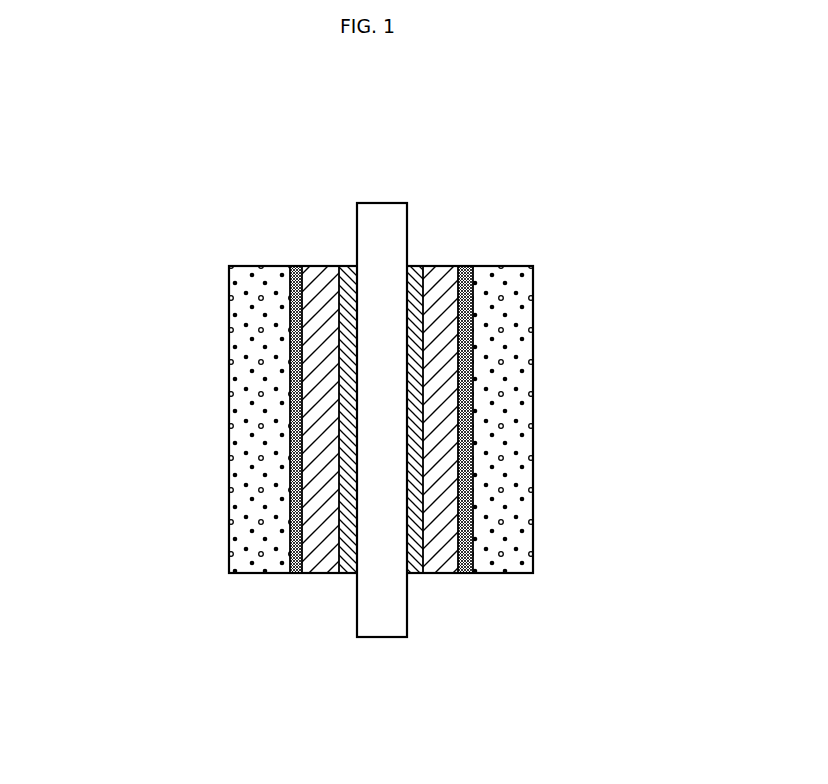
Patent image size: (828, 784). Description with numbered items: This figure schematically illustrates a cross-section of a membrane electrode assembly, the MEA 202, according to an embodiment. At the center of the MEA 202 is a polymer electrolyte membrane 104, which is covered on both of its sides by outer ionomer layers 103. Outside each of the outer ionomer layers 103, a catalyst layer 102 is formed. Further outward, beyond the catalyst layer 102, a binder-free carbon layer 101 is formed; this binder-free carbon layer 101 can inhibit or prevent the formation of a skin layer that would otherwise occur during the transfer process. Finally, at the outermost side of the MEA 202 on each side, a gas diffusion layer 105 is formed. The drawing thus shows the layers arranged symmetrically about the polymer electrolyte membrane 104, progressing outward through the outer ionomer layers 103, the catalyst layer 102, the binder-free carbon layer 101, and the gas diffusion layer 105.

The membrane electrode assembly 202 is at (226, 212).
The binder-free carbon layer 101 is at (288, 410).
The catalyst layer 102 is at (323, 573).
The outer ionomer layer 103 is at (417, 266).
The polymer electrolyte membrane 104 is at (370, 512).
The gas diffusion layer 105 is at (525, 305).